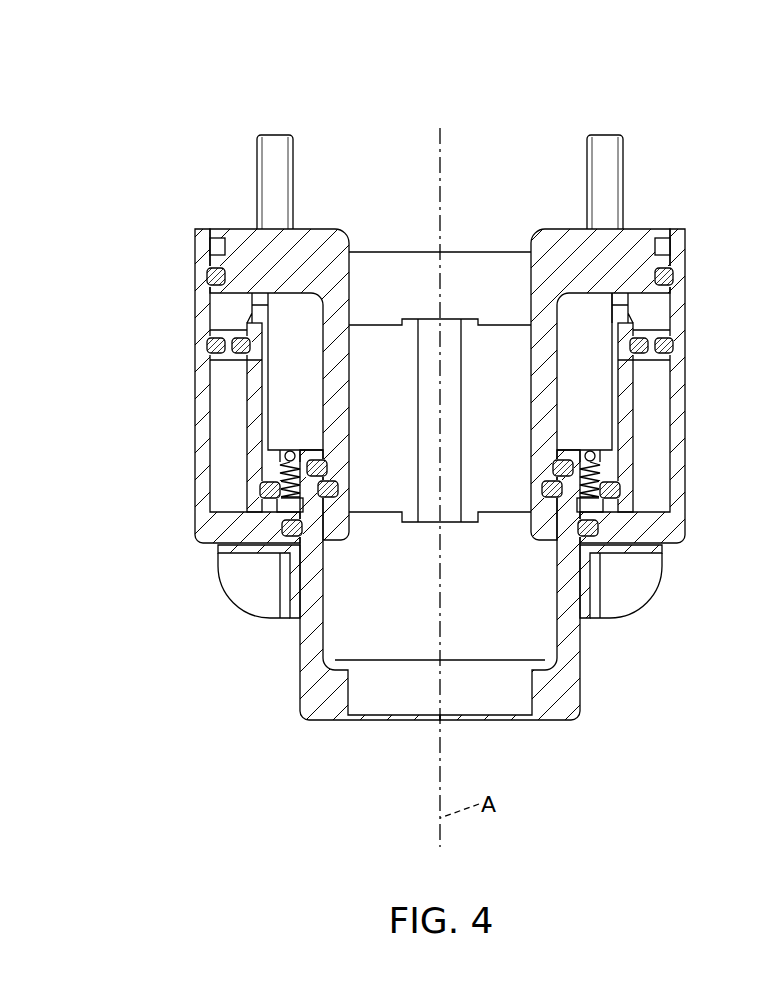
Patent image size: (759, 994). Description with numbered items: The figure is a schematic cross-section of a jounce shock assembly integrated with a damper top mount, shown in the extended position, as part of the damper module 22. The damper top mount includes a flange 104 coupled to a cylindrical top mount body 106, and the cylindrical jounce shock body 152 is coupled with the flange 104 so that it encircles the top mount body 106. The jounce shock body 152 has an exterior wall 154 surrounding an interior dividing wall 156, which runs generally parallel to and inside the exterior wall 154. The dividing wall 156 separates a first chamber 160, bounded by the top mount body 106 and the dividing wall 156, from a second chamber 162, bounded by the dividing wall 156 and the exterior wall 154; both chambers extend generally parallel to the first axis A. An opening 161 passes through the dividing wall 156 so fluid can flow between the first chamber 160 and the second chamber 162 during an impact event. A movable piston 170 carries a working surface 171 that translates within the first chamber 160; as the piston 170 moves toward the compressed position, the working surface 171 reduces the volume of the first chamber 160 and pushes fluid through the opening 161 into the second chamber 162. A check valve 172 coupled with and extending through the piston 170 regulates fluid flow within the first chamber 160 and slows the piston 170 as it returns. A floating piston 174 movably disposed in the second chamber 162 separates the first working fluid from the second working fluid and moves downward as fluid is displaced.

The damper module 22 is at (420, 368).
The flange 104 is at (637, 247).
The cylindrical top mount body 106 is at (363, 243).
The jounce shock body 152 is at (215, 369).
The exterior wall 154 is at (197, 290).
The dividing wall 156 is at (240, 398).
The first chamber 160 is at (284, 314).
The opening 161 is at (640, 302).
The second chamber 162 is at (205, 466).
The piston 170 is at (562, 693).
The working surface 171 is at (612, 443).
The check valve 172 is at (268, 496).
The floating piston 174 is at (652, 352).